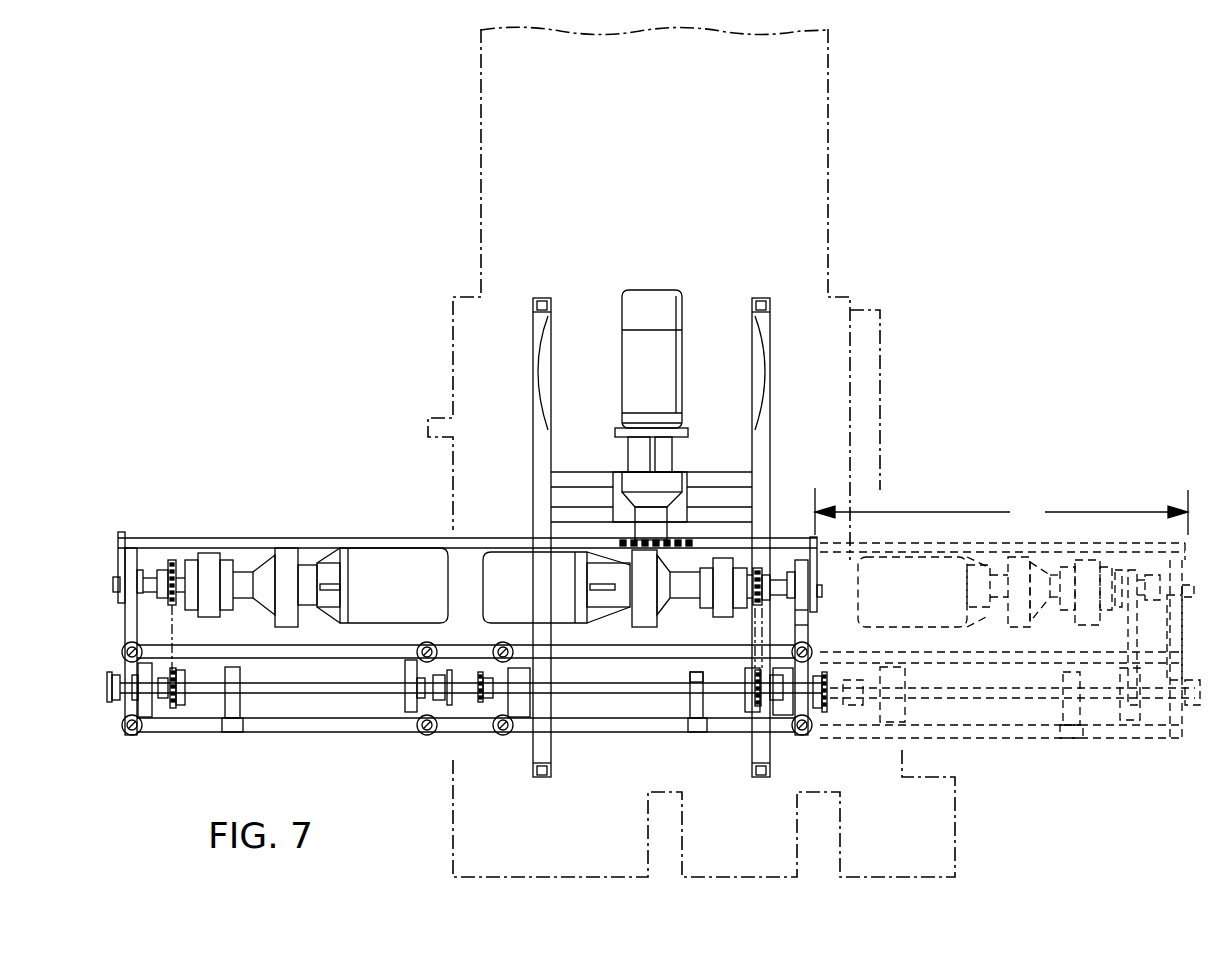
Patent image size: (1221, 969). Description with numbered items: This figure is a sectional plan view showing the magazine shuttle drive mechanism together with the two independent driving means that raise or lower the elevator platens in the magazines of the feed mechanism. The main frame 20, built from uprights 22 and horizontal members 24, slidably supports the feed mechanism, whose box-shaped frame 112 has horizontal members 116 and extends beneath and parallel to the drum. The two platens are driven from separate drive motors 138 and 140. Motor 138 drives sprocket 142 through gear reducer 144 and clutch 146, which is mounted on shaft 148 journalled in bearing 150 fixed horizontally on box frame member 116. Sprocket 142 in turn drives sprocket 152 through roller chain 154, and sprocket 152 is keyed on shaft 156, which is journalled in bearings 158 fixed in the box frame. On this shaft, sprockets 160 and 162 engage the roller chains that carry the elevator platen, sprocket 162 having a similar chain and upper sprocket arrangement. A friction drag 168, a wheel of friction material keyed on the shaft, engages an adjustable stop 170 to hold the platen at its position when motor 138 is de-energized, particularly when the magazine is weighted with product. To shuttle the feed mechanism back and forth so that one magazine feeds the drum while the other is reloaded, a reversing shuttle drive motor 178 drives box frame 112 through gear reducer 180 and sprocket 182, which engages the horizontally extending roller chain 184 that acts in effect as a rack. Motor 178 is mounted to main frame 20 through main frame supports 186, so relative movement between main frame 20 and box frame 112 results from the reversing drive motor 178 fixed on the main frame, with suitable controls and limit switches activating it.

The main frame 20 is at (772, 360).
The uprights 22 is at (541, 297).
The horizontal members 24 is at (537, 385).
The frame 112 is at (282, 735).
The horizontal members 116 is at (330, 735).
The drive motor 138 is at (513, 608).
The drive motor 140 is at (380, 606).
The sprocket 142 is at (785, 560).
The gear reducer 144 is at (636, 627).
The clutch 146 is at (722, 618).
The shaft 148 is at (818, 585).
The bearing 150 is at (810, 613).
The sprocket 152 is at (757, 712).
The roller chain 154 is at (785, 640).
The shaft 156 is at (620, 700).
The bearings 158 is at (522, 712).
The sprocket 160 is at (826, 700).
The sprocket 162 is at (478, 700).
The friction drag 168 is at (690, 682).
The adjustable stop 170 is at (698, 732).
The reversing shuttle drive motor 178 is at (628, 378).
The gear reducer 180 is at (670, 482).
The sprocket 182 is at (628, 540).
The roller chain 184 is at (368, 540).
The main frame supports 186 is at (578, 510).